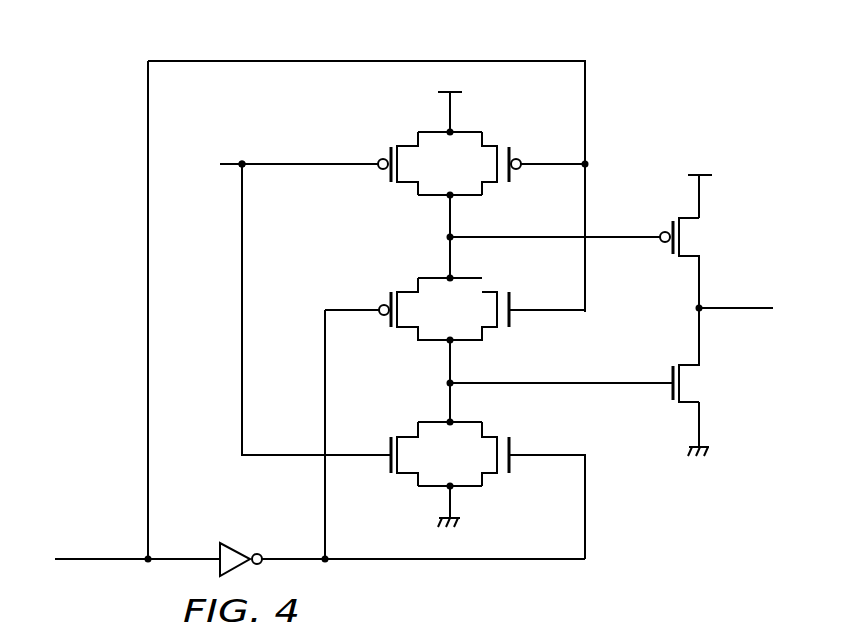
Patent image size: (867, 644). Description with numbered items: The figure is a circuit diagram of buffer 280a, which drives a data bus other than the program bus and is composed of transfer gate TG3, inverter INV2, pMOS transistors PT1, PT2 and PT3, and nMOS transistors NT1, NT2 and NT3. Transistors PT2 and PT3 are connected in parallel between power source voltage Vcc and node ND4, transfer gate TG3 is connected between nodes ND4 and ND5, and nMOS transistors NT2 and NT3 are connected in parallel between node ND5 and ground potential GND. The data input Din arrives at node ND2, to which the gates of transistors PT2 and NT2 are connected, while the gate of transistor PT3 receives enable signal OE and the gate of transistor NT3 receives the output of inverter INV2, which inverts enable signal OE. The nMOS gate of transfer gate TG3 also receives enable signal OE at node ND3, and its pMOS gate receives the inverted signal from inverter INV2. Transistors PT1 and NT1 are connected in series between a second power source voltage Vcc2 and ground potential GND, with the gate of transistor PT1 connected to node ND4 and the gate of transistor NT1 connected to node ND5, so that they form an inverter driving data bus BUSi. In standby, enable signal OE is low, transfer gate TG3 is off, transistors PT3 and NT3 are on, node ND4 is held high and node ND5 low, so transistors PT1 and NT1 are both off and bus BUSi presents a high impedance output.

The buffer 280a is at (634, 91).
The pMOS transistor PT1 is at (670, 229).
The pMOS transistor PT2 is at (389, 152).
The pMOS transistor PT3 is at (513, 152).
The nMOS transistor NT1 is at (670, 395).
The nMOS transistor NT2 is at (389, 462).
The nMOS transistor NT3 is at (513, 448).
The transfer gate TG3 is at (389, 298).
The inverter INV2 is at (255, 528).
The node ND2 is at (246, 168).
The node ND3 is at (590, 160).
The node ND4 is at (447, 236).
The node ND5 is at (447, 382).
The data input signal Din is at (283, 164).
The power source voltage Vcc is at (450, 101).
The supply voltage Vcc2 is at (699, 185).
The ground potential GND is at (594, 465).
The enable signal OE is at (123, 561).
The data bus BUSi is at (735, 299).